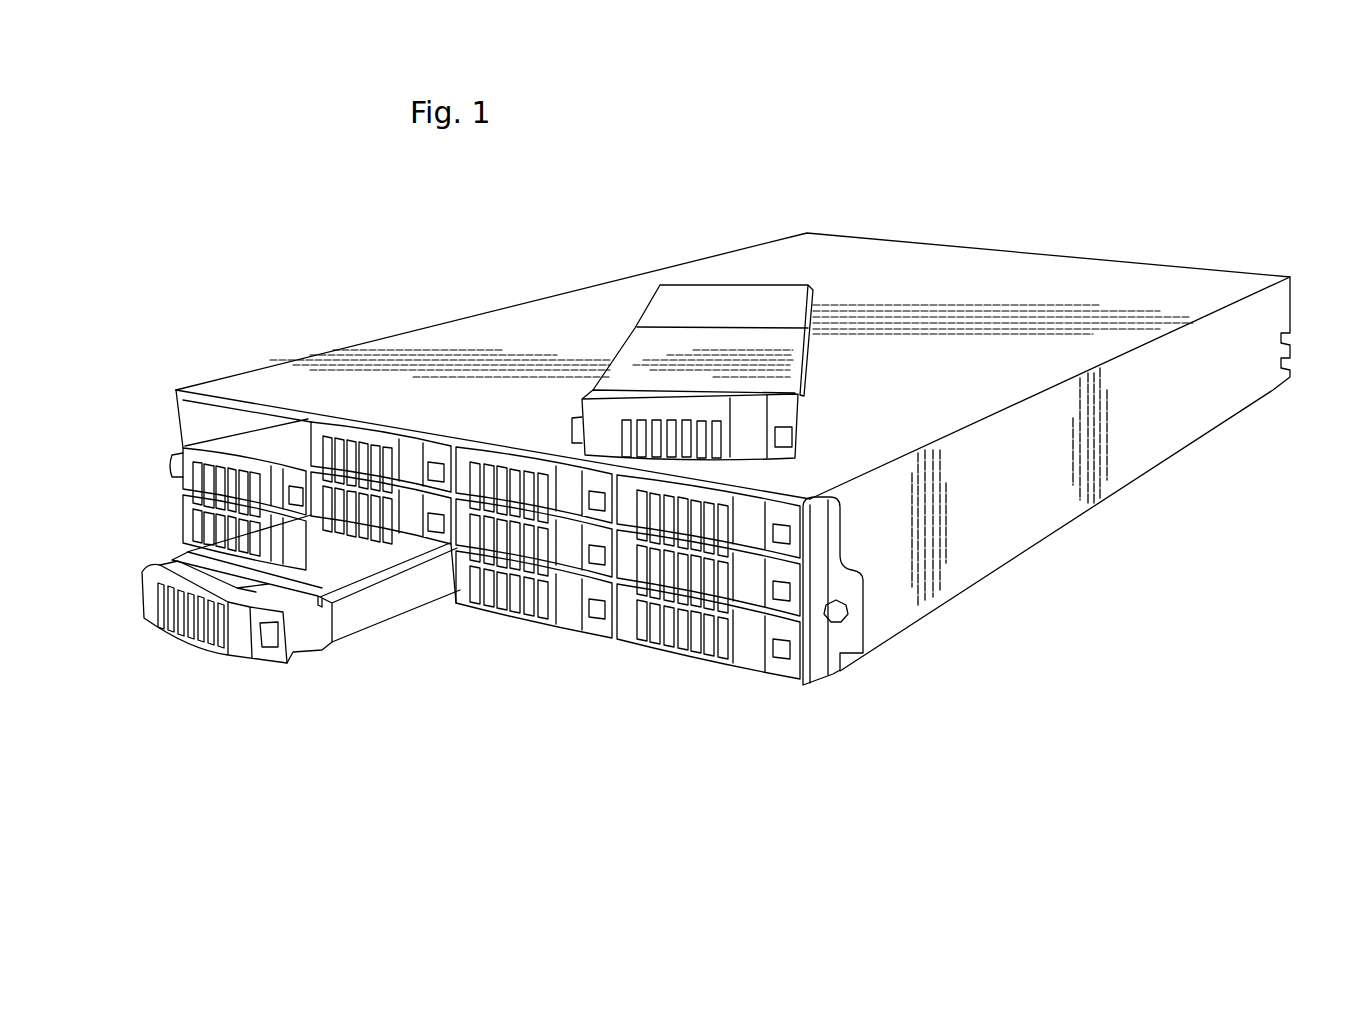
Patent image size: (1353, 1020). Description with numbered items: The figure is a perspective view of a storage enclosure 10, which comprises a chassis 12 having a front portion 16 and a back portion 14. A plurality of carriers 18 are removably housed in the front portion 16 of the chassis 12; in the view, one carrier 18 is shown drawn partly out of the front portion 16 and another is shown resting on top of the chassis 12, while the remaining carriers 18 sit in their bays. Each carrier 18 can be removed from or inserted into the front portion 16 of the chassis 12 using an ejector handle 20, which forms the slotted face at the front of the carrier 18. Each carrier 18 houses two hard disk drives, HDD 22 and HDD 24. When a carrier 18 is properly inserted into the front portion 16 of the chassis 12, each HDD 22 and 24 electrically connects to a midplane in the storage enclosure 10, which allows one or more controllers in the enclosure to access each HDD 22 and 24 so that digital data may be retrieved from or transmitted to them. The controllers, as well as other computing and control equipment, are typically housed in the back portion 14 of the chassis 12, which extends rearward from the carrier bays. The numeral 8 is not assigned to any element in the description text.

The disk drive 8 is at (741, 264).
The storage enclosure 10 is at (386, 294).
The chassis 12 is at (583, 275).
The back portion 14 is at (1027, 269).
The front portion 16 is at (258, 366).
The carrier 18 is at (350, 656).
The ejector handle 20 is at (233, 670).
The hard disk drive 22 is at (674, 296).
The hard disk drive 24 is at (619, 362).